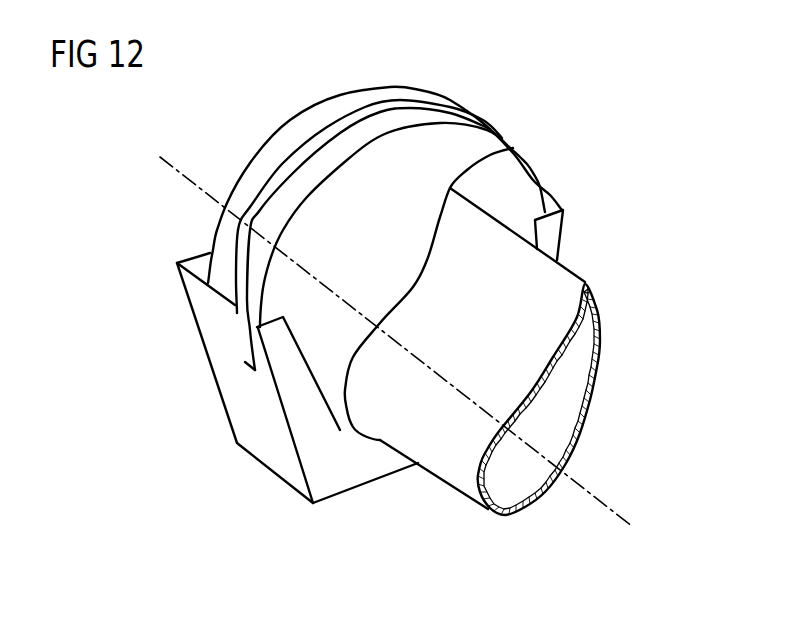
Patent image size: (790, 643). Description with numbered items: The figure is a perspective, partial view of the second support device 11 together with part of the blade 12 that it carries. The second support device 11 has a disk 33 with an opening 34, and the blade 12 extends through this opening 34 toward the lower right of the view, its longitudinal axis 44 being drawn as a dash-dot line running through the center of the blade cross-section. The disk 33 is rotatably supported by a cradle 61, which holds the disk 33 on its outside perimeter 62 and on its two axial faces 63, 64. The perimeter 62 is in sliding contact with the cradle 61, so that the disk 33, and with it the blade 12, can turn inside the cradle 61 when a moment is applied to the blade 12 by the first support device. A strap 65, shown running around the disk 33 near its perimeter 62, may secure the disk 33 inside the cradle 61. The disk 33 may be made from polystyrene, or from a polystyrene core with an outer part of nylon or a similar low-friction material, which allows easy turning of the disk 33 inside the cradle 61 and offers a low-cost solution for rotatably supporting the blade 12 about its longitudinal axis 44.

The second support device 11 is at (235, 129).
The blade 12 is at (587, 259).
The disk 33 is at (320, 113).
The opening 34 is at (512, 149).
The longitudinal axis 44 is at (617, 507).
The cradle 61 is at (272, 452).
The outside perimeter 62 is at (225, 218).
The axial face 63 is at (322, 320).
The axial face 64 is at (211, 241).
The strap 65 is at (360, 113).